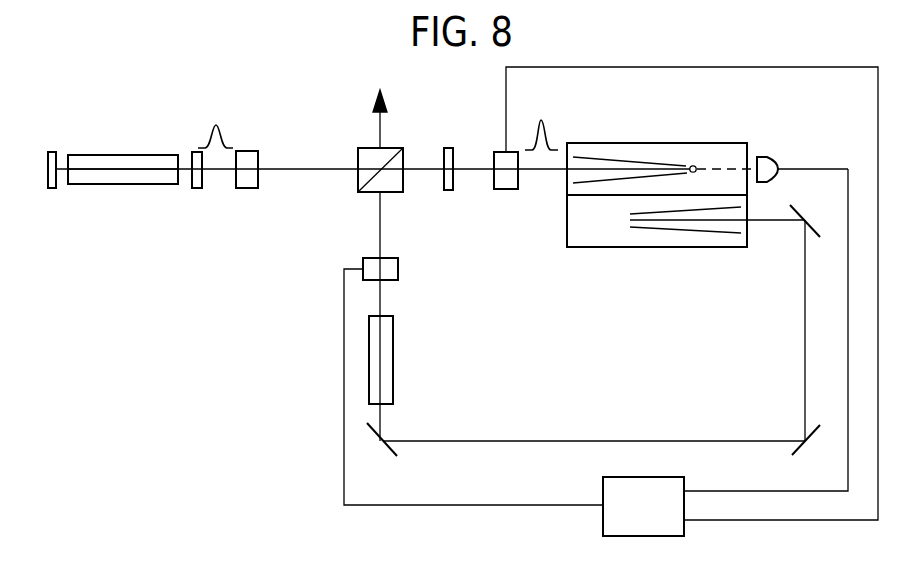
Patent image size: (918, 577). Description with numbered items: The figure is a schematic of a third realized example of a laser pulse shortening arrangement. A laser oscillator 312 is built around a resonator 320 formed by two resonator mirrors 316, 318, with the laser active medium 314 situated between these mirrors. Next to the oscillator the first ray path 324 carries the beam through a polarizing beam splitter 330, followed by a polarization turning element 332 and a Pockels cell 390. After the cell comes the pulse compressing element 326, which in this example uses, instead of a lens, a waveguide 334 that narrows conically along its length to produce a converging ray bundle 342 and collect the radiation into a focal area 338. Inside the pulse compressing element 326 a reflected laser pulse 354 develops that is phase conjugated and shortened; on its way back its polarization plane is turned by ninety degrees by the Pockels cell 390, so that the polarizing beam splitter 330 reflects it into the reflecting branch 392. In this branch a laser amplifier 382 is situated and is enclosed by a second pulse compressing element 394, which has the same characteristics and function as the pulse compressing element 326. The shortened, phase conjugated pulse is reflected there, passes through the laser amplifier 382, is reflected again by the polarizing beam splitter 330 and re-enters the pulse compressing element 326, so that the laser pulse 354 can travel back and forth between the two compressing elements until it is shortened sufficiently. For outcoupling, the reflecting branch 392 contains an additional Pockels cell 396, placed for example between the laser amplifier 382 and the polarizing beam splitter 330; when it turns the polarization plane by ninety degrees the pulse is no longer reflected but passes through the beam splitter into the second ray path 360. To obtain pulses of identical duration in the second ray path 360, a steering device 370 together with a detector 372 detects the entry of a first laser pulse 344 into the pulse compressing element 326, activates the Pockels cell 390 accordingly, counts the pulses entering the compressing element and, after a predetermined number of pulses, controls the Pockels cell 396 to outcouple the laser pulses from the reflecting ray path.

The laser oscillator 312 is at (102, 184).
The laser active medium 314 is at (145, 177).
The resonator mirror 316 is at (52, 188).
The resonator mirror 318 is at (198, 188).
The resonator 320 is at (118, 148).
The first ray path 324 is at (273, 168).
The pulse compressing element 326 is at (736, 150).
The polarizing beam splitter 330 is at (387, 152).
The polarization turning element 332 is at (450, 190).
The focused beam 334 is at (594, 157).
The focal area 338 is at (694, 165).
The beam path in cell 342 is at (640, 150).
The first laser pulse 344 is at (218, 124).
The reflected laser pulse 354 is at (541, 122).
The second ray path 360 is at (377, 114).
The steering device 370 is at (622, 524).
The detector 372 is at (768, 158).
The laser amplifier 382 is at (385, 358).
The Pockels cell 390 is at (505, 189).
The reflecting branch 392 is at (378, 216).
The second pulse compressing element 394 is at (602, 238).
The additional Pockels cell 396 is at (398, 270).